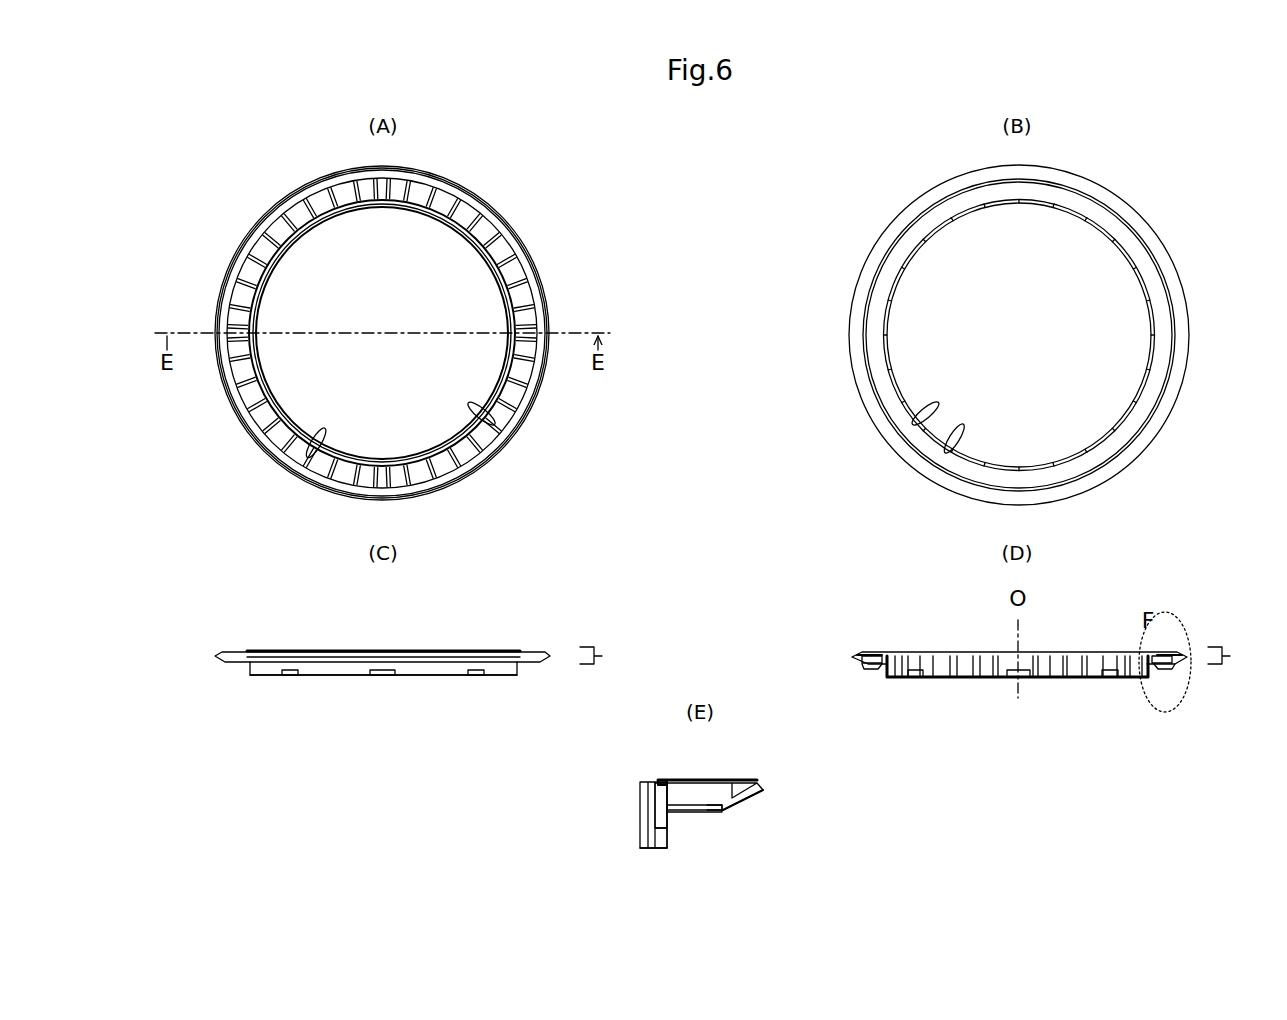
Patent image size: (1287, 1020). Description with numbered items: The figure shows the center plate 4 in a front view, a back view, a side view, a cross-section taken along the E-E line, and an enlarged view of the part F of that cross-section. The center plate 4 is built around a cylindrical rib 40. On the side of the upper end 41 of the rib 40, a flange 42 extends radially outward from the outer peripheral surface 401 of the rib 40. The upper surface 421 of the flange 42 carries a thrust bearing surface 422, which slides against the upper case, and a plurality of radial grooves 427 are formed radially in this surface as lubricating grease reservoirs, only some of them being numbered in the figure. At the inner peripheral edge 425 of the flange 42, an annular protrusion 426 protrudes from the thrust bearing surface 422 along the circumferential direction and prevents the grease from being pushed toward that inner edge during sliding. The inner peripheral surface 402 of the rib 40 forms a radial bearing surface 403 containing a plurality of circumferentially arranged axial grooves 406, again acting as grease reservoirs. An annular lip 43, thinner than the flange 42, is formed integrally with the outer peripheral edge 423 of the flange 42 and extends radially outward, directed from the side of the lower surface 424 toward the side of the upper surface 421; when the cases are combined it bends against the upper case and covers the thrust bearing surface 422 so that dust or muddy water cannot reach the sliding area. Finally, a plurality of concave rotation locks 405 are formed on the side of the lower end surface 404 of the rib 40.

The center plate 4 is at (534, 161).
The cylindrical rib 40 is at (1152, 383).
The upper end 41 is at (922, 656).
The flange 42 is at (552, 283).
The annular lip 43 is at (870, 665).
The outer peripheral surface 401 is at (1137, 408).
The inner peripheral surface 402 is at (478, 420).
The radial bearing surface 403 is at (318, 432).
The lower end surface 404 is at (323, 677).
The rotation lock 405 is at (1148, 328).
The axial groove 406 is at (1040, 655).
The upper surface 421 is at (462, 212).
The thrust bearing surface 422 is at (520, 232).
The outer peripheral edge 423 is at (862, 655).
The lower surface 424 is at (882, 345).
The inner peripheral edge 425 is at (640, 790).
The annular protrusion 426 is at (660, 780).
The radial groove 427 is at (300, 190).